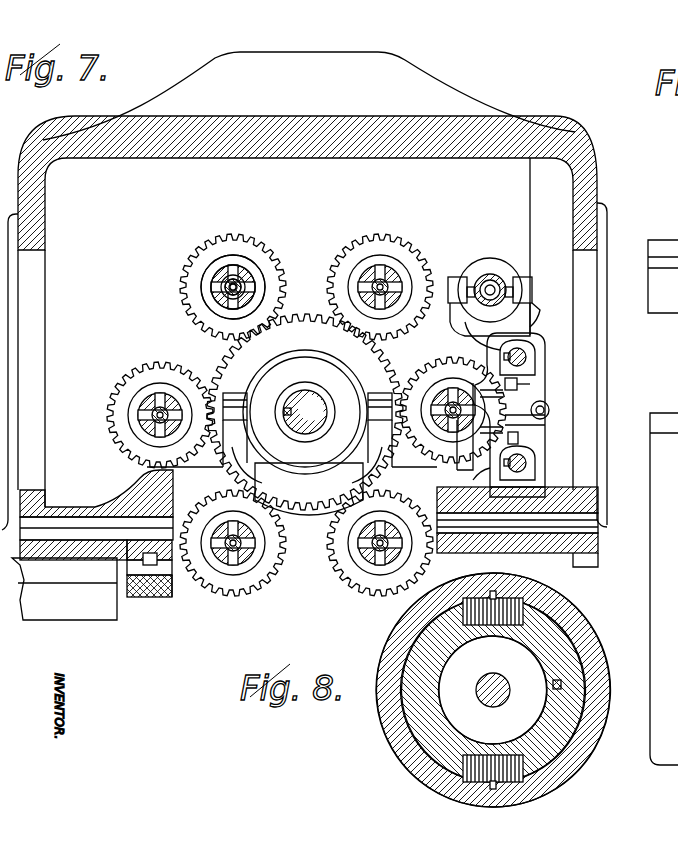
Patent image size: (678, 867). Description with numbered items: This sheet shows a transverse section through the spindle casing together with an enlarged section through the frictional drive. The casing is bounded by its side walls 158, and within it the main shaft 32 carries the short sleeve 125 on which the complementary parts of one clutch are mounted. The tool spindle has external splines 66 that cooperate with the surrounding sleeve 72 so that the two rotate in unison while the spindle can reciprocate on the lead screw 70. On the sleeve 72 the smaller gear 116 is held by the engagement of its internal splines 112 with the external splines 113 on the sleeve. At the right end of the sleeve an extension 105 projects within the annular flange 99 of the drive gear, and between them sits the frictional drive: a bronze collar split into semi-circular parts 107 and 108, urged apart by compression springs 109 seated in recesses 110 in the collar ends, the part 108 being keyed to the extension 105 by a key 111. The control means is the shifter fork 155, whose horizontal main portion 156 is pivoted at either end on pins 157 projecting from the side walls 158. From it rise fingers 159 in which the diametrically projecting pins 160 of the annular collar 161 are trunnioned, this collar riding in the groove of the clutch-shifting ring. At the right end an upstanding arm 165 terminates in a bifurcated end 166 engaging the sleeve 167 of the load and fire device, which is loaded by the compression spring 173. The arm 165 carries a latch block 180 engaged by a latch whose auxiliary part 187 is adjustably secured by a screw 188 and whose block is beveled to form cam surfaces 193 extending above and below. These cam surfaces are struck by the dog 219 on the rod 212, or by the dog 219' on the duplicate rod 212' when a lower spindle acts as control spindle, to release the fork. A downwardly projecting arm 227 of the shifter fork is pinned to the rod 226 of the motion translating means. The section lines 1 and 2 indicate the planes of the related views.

In FIG. 7, the section line 1- 1 is at (400, 247).
In FIG. 7, the section line 2- 2 is at (227, 352).
In FIG. 7, the main shaft 32 is at (297, 400).
In FIG. 7, the splines 66 is at (233, 273).
In FIG. 7, the lead screw 70 is at (243, 283).
In FIG. 8, the lead screw 70 is at (503, 687).
In FIG. 7, the sleeve 72 is at (227, 270).
In FIG. 8, the annular flange 99 is at (573, 747).
In FIG. 8, the extension 105 is at (440, 667).
In FIG. 8, the collar part 107 is at (400, 713).
In FIG. 8, the collar part 108 is at (560, 663).
In FIG. 8, the compression springs 109 is at (492, 752).
In FIG. 8, the recesses 110 is at (527, 603).
In FIG. 8, the key 111 is at (553, 685).
In FIG. 7, the internal splines 112 is at (213, 298).
In FIG. 7, the external splines 113 is at (213, 287).
In FIG. 7, the gear 116 is at (273, 270).
In FIG. 7, the sleeve 125 is at (290, 443).
In FIG. 7, the shifter fork 155 is at (497, 490).
In FIG. 7, the main portion 156 is at (178, 561).
In FIG. 7, the pins 157 is at (95, 520).
In FIG. 7, the side walls 158 is at (37, 204).
In FIG. 7, the fingers 159 is at (292, 467).
In FIG. 7, the pins 160 is at (236, 393).
In FIG. 7, the annular collar 161 is at (320, 387).
In FIG. 7, the arm 165 is at (473, 347).
In FIG. 7, the bifurcated end 166 is at (520, 327).
In FIG. 7, the sleeve 167 is at (490, 278).
In FIG. 7, the compression spring 173 is at (503, 277).
In FIG. 7, the latch block 180 is at (493, 420).
In FIG. 7, the auxiliary part 187 is at (527, 390).
In FIG. 7, the screw 188 is at (525, 430).
In FIG. 7, the cam surfaces 193 is at (517, 348).
In FIG. 7, the rod 212 is at (482, 334).
In FIG. 7, the duplicate rod 212' is at (457, 485).
In FIG. 7, the dog 219 is at (453, 410).
In FIG. 7, the dog 219' is at (411, 519).
In FIG. 7, the rod 226 is at (147, 598).
In FIG. 7, the arm 227 is at (173, 582).